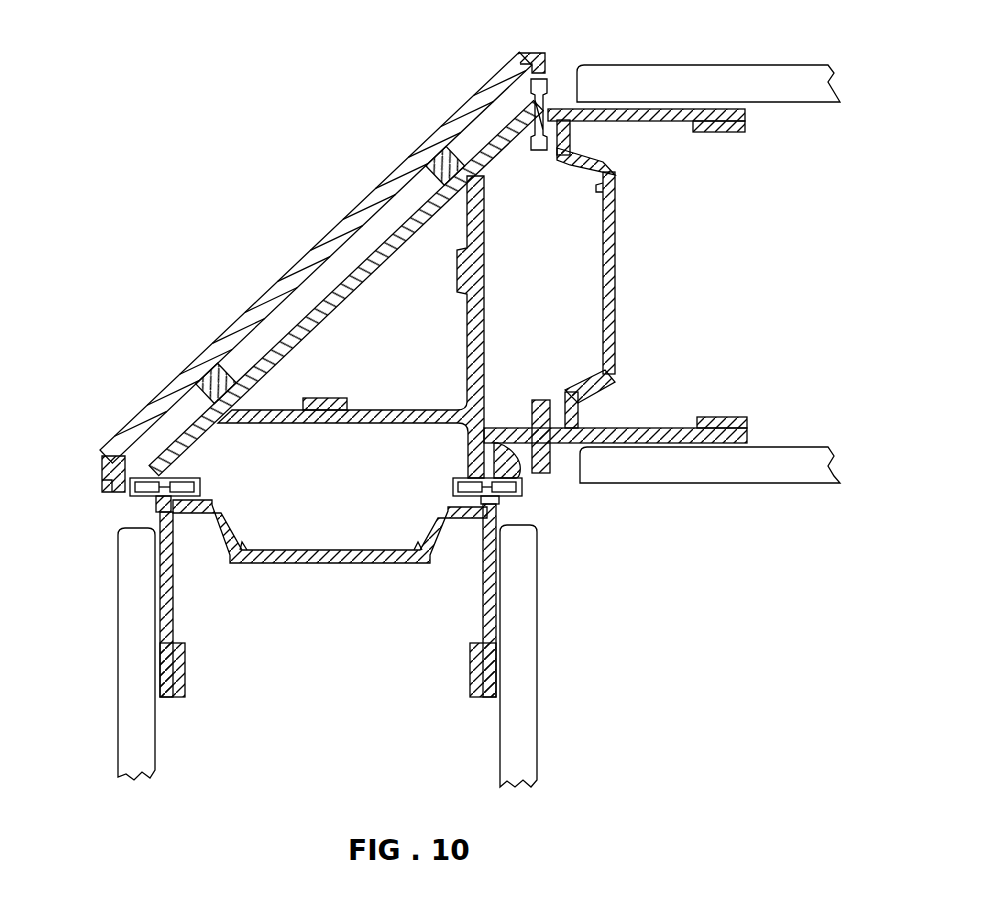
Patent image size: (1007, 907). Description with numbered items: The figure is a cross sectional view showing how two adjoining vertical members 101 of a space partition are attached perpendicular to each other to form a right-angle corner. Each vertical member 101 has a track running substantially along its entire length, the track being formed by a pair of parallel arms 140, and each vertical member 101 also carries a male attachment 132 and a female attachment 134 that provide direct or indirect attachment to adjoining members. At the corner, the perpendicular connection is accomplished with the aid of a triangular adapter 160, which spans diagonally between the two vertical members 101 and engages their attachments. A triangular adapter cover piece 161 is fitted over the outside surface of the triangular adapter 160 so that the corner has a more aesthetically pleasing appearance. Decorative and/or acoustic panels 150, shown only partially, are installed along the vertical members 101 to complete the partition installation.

The vertical member 101 is at (740, 420).
The male attachment 132 is at (556, 103).
The female attachment 134 is at (508, 415).
The arm 140 is at (657, 122).
The decorative and/or acoustic panel 150 is at (730, 84).
The triangular adapter 160 is at (318, 296).
The triangular adapter cover piece 161 is at (400, 166).